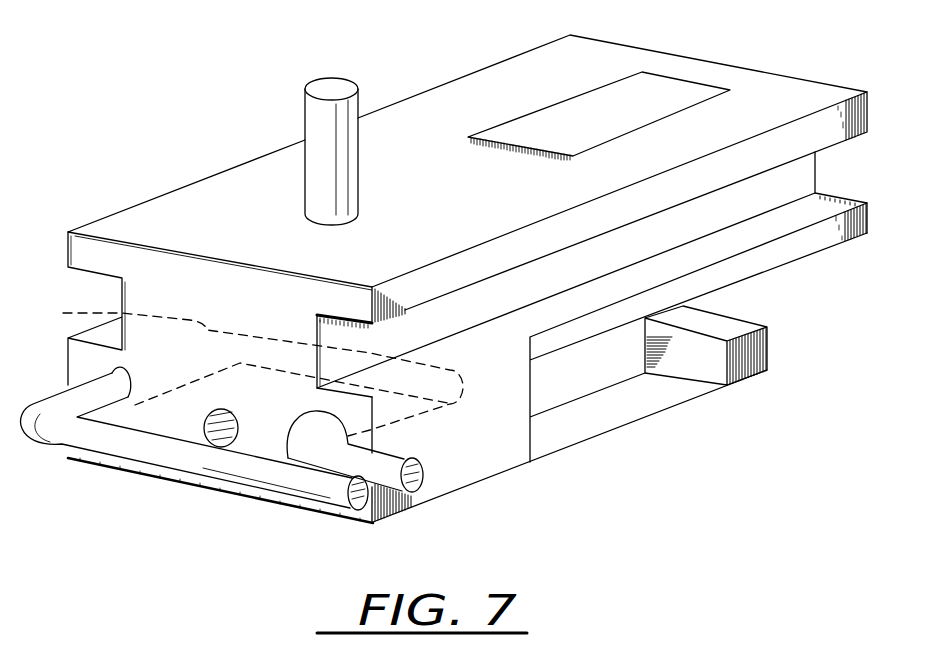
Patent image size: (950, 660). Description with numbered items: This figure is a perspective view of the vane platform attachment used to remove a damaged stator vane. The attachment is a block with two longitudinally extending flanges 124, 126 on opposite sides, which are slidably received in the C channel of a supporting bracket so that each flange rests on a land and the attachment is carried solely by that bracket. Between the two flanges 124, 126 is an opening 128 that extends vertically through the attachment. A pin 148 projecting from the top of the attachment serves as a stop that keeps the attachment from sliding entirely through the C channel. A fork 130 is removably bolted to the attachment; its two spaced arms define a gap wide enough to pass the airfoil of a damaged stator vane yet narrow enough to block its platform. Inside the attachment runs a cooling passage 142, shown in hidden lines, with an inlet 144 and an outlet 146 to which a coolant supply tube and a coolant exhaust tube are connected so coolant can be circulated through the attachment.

The flange 124 is at (85, 250).
The flange 126 is at (350, 300).
The opening 128 is at (615, 118).
The fork 130 is at (673, 393).
The vane platform attachment cooling passage 142 is at (237, 363).
The inlet 144 is at (328, 487).
The outlet 146 is at (428, 450).
The pin 148 is at (352, 128).